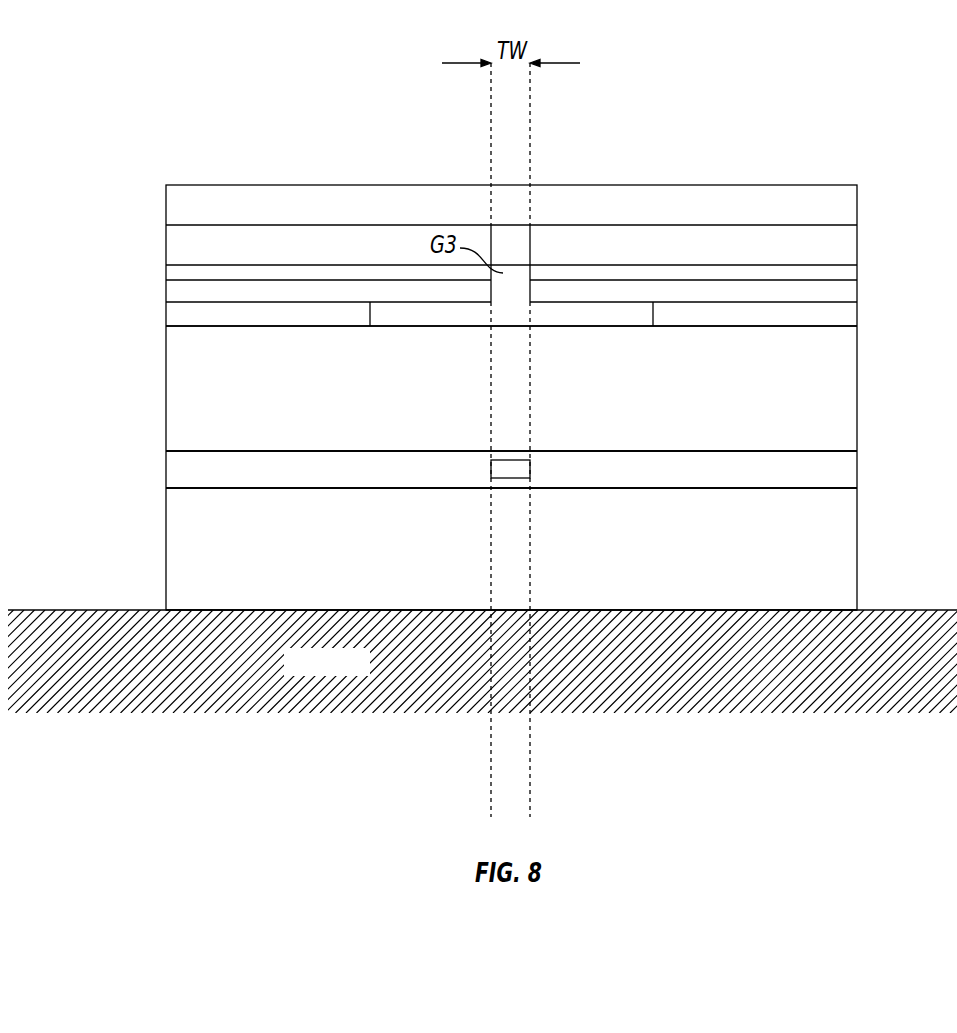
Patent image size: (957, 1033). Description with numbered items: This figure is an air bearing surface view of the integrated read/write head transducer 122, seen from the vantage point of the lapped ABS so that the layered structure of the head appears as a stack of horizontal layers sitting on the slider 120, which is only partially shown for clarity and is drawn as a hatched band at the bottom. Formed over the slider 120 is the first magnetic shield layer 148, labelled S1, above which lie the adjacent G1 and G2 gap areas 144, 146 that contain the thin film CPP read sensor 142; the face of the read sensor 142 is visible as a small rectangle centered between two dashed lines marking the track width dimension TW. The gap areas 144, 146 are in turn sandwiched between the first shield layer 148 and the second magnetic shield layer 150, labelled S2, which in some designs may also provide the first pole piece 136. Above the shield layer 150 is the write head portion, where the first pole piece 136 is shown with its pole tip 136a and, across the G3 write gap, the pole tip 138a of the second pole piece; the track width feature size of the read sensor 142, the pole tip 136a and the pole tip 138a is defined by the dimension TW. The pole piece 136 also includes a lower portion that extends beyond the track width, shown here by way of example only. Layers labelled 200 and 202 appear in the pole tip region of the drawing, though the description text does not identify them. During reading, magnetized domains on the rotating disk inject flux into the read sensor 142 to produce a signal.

The transducer 122 is at (785, 78).
The slider 120 is at (80, 609).
The first pole piece 136 is at (525, 318).
The pole tip of first pole piece 136a is at (518, 295).
The pole tip of second pole piece 138a is at (503, 248).
The CPP read sensor 142 is at (522, 470).
The G1 gap area 144 is at (165, 468).
The G2 gap area 146 is at (165, 468).
The first (S1) magnetic shield layer 148 is at (165, 549).
The second (S2) magnetic shield layer 150 is at (165, 388).
The magnetic layer of pole tip structure 200 is at (288, 292).
The nonmagnetic layer of pole tip structure 202 is at (345, 257).